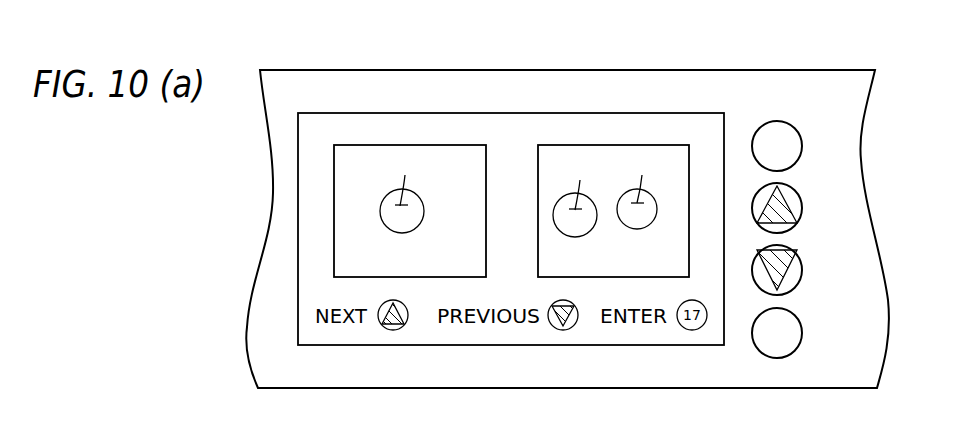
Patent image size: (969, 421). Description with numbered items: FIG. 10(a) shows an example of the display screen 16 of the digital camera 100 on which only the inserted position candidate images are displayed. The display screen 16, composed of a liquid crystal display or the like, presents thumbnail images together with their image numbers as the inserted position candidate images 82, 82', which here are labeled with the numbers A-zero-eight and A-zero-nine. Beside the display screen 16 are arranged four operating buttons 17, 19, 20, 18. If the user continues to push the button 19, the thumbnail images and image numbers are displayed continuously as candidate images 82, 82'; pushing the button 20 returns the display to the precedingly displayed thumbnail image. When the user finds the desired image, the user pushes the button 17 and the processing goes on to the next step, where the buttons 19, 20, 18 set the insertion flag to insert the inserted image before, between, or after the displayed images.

The digital camera 100 is at (752, 62).
The display screen 16 is at (510, 113).
The inserted position candidate image 82 is at (410, 157).
The inserted position candidate image 82' is at (613, 157).
The button 17 is at (802, 143).
The button 19 is at (802, 207).
The button 20 is at (802, 270).
The button 18 is at (802, 331).